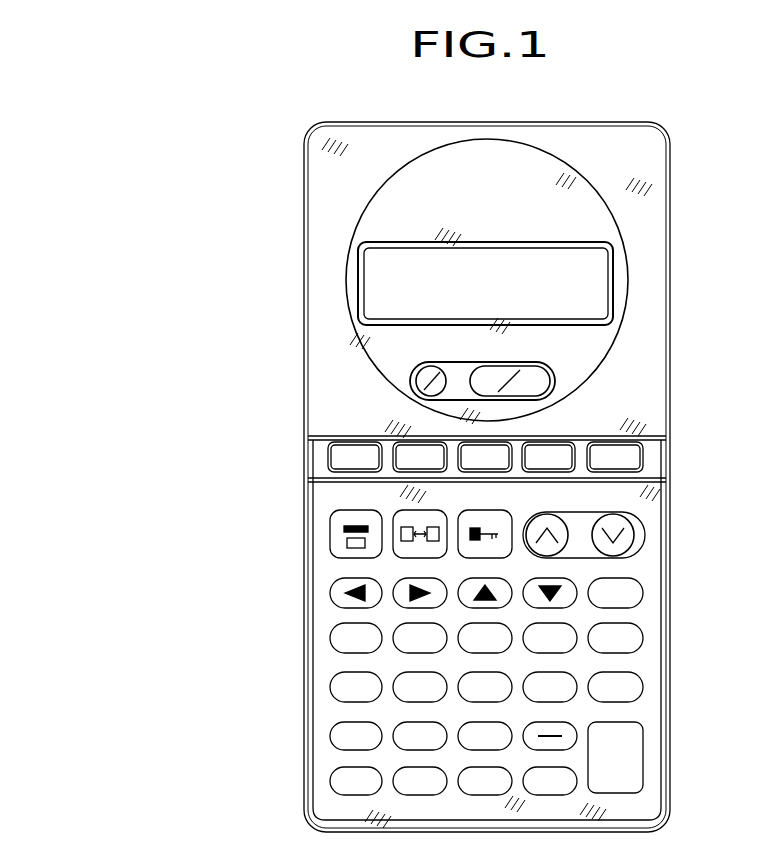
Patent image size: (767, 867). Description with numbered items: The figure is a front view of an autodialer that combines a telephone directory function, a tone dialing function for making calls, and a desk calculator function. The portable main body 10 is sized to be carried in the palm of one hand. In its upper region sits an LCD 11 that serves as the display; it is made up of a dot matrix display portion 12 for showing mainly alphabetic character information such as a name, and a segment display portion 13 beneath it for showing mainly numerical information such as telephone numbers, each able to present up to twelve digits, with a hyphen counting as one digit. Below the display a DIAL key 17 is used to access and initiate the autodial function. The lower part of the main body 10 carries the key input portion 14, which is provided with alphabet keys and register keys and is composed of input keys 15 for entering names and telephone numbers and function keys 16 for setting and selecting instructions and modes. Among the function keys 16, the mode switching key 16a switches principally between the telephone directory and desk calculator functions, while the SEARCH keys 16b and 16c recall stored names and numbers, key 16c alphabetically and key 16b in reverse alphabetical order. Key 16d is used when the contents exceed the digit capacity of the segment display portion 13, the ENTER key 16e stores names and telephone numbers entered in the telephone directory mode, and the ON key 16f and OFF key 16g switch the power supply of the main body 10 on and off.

The main body 10 is at (672, 317).
The LCD 11 is at (612, 276).
The dot matrix display portion 12 is at (360, 262).
The segment display portion 13 is at (360, 298).
The key input portion 14 is at (123, 520).
The input keys 15 is at (218, 623).
The function keys 16 is at (218, 440).
The mode switching key 16a is at (330, 520).
The SEARCH key 16b is at (565, 520).
The SEARCH key 16c is at (645, 535).
The key 16d is at (565, 585).
The ENTER key 16e is at (643, 757).
The ON key 16f is at (643, 457).
The OFF key 16g is at (560, 445).
The DIAL key 17 is at (553, 381).